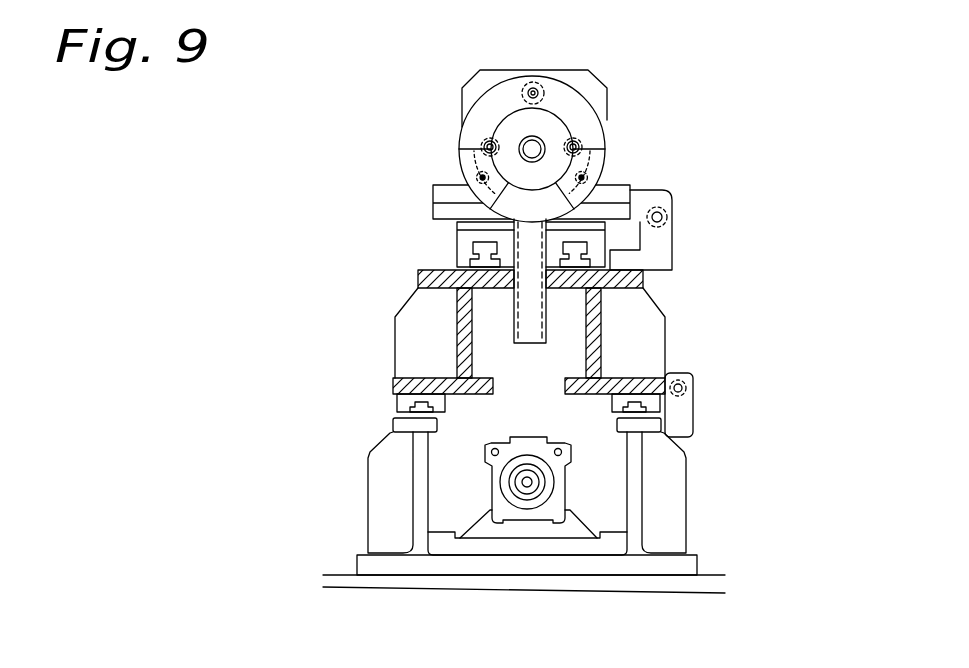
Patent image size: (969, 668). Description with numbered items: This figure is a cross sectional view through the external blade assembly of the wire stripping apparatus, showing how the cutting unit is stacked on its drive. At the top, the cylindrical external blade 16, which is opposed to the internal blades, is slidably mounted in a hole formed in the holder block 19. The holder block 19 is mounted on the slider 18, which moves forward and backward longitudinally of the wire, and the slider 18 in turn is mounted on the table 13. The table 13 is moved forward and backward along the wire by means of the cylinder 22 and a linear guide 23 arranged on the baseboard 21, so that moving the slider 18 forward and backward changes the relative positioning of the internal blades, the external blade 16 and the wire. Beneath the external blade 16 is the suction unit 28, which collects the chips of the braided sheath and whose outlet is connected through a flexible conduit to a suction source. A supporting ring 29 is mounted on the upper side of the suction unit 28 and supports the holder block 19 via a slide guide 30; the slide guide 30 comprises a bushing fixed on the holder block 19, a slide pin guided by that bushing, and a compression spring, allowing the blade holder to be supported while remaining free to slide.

The table 13 is at (637, 286).
The external blade 16 is at (537, 143).
The slider 18 is at (440, 212).
The holder block 19 is at (512, 72).
The baseboard 21 is at (687, 565).
The cylinder 22 is at (536, 482).
The linear guide 23 is at (642, 408).
The suction unit 28 is at (520, 212).
The supporting ring 29 is at (590, 130).
The slide guide 30 is at (516, 99).